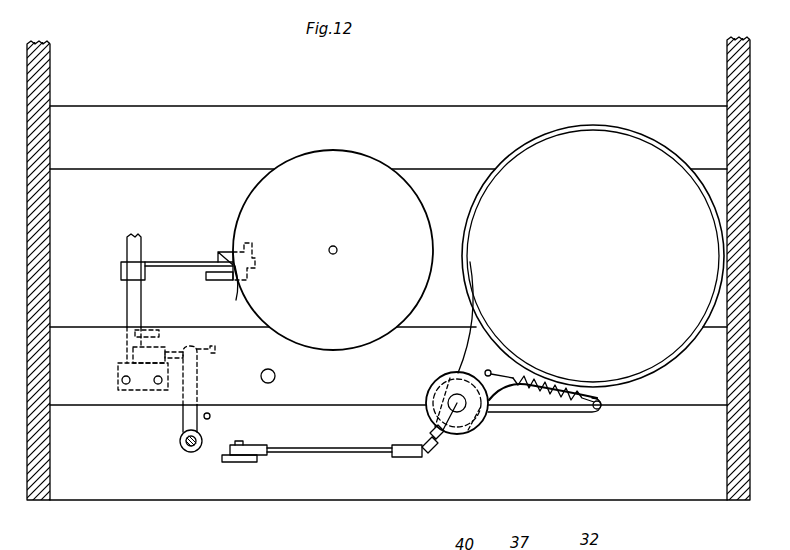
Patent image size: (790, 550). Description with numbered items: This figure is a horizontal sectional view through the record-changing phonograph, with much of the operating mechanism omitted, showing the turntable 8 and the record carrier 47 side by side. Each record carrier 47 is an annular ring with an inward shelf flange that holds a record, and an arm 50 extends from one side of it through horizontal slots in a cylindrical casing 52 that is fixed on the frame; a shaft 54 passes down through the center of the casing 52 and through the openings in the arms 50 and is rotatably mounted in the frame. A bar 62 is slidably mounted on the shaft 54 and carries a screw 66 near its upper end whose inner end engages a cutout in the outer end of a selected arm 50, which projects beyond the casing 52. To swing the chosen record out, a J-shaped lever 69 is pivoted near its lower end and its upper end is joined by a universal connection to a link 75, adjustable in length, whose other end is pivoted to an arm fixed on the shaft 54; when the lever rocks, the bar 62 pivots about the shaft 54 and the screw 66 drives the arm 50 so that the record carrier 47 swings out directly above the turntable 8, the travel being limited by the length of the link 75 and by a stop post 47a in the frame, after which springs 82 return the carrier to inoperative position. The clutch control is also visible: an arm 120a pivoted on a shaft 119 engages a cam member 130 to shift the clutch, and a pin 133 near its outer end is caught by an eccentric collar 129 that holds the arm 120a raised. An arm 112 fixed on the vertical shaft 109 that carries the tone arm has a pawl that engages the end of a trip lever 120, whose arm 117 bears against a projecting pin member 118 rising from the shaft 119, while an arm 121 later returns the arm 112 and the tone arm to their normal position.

The turntable 8 is at (324, 160).
The record carrier 47 is at (587, 128).
The stop post 47a is at (276, 376).
The shaft 119 is at (128, 300).
The arm 120a is at (180, 249).
The eccentric collar 129 is at (210, 280).
The cam member 130 is at (228, 250).
The pin 133 is at (236, 300).
The projecting pin member 118 is at (150, 330).
The arm 117 is at (166, 343).
The trip lever 120 is at (226, 340).
The arm 112 is at (188, 418).
The vertical shaft 109 is at (180, 442).
The arm 121 is at (212, 416).
The J-shaped lever 69 is at (240, 462).
The link 75 is at (342, 456).
The bar 62 is at (420, 436).
The screw 66 is at (432, 450).
The cylindrical casing 52 is at (443, 378).
The arm 50 is at (440, 426).
The shaft 54 is at (460, 408).
The springs 82 is at (548, 392).